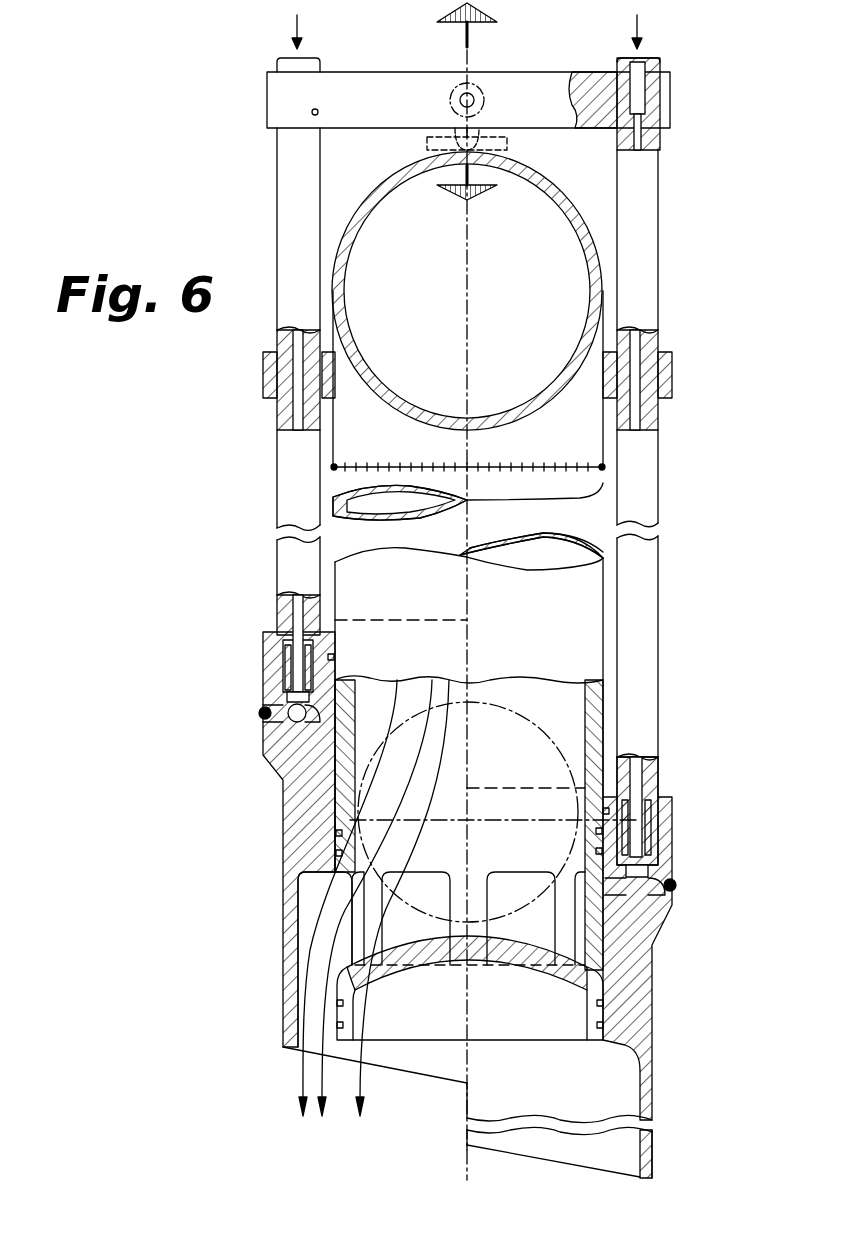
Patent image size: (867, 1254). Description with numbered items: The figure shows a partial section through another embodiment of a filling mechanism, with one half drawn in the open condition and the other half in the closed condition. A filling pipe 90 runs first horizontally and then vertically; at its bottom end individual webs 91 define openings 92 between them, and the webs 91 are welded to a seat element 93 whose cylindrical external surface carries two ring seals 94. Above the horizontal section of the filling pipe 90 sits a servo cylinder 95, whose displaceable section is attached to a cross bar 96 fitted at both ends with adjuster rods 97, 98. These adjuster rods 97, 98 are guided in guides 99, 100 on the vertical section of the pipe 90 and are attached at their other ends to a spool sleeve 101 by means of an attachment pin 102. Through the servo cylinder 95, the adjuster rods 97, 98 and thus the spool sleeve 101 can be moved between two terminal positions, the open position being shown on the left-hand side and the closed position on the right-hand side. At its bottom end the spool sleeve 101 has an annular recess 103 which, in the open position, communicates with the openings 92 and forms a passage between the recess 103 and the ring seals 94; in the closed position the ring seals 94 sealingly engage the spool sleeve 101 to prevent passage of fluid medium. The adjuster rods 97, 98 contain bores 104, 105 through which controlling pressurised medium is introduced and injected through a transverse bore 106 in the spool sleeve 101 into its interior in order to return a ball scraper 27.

The ball scraper 27 is at (605, 720).
The filling pipe 90 is at (605, 300).
The webs 91 is at (484, 880).
The openings 92 is at (544, 885).
The seat element 93 is at (585, 985).
The ring seals 94 is at (648, 1037).
The servo cylinder 95 is at (505, 148).
The cross bar 96 is at (535, 85).
The adjuster rod 97 is at (290, 207).
The adjuster rod 98 is at (655, 238).
The guide 99 is at (268, 372).
The guide 100 is at (673, 378).
The spool sleeve 101 is at (305, 803).
The attachment pin 102 is at (275, 655).
The annular recess 103 is at (310, 915).
The bore 104 is at (635, 413).
The bore 105 is at (305, 412).
The transverse bore 106 is at (645, 915).